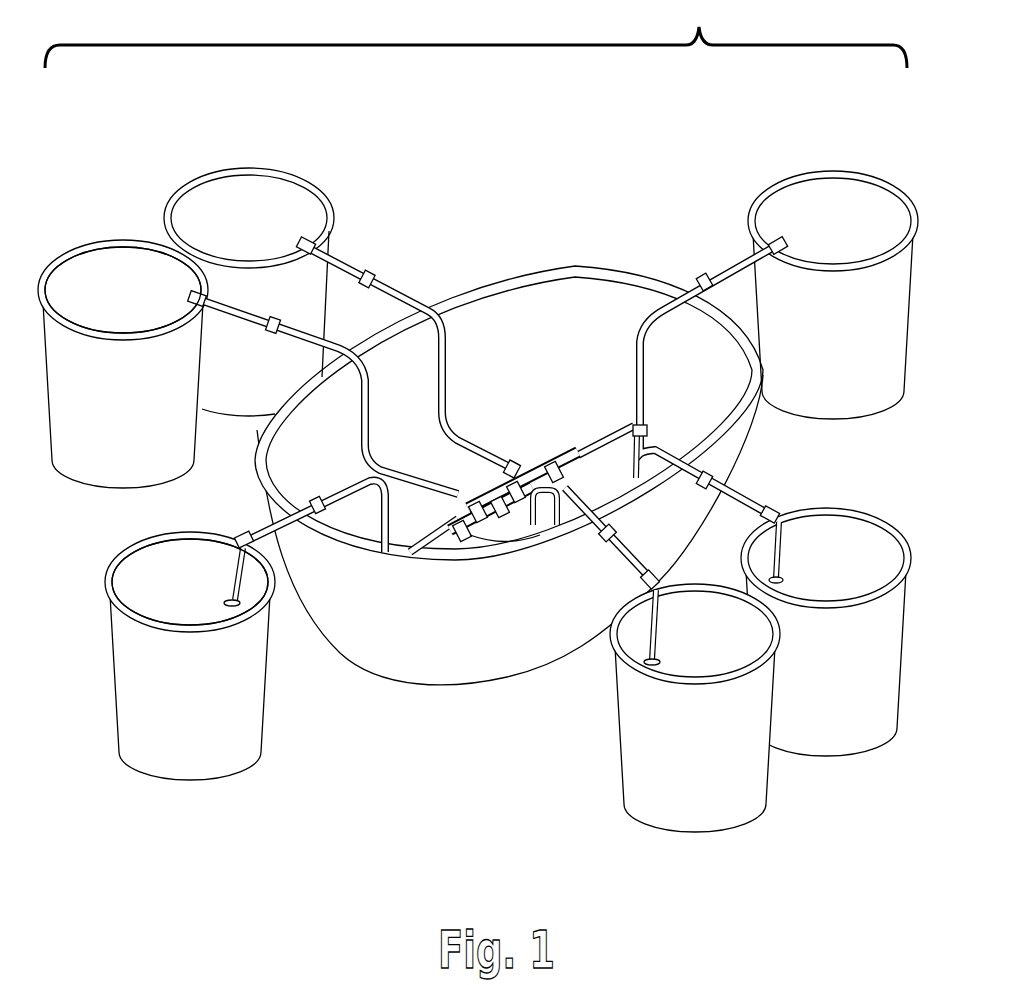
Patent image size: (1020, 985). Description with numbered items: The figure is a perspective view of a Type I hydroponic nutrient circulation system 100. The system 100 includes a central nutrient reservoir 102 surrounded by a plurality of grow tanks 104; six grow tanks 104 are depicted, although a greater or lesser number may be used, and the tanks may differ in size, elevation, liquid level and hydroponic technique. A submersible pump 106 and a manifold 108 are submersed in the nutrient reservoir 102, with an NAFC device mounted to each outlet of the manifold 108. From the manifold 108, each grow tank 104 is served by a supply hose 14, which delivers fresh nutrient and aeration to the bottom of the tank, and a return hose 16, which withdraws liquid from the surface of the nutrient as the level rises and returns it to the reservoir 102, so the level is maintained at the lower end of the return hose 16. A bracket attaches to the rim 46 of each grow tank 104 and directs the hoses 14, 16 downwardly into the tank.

The Type I hydroponic nutrient circulation system 100 is at (476, 35).
The nutrient reservoir 102 is at (554, 262).
The grow tanks 104 is at (304, 168).
The submersible pump 106 is at (504, 537).
The manifold 108 is at (545, 456).
The supply hose 14 is at (733, 265).
The return hose 16 is at (742, 288).
The rim 46 is at (97, 243).